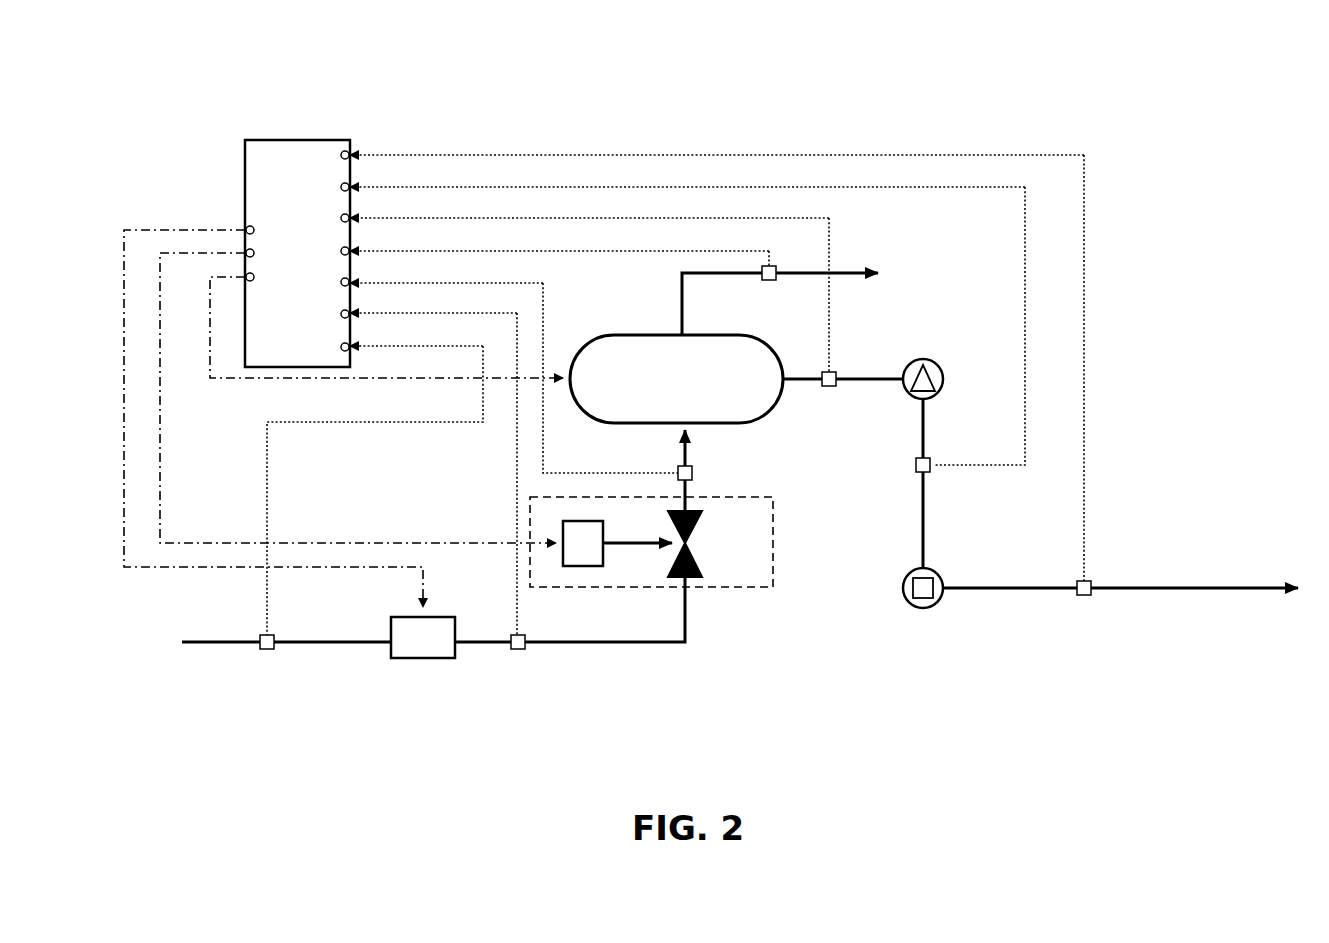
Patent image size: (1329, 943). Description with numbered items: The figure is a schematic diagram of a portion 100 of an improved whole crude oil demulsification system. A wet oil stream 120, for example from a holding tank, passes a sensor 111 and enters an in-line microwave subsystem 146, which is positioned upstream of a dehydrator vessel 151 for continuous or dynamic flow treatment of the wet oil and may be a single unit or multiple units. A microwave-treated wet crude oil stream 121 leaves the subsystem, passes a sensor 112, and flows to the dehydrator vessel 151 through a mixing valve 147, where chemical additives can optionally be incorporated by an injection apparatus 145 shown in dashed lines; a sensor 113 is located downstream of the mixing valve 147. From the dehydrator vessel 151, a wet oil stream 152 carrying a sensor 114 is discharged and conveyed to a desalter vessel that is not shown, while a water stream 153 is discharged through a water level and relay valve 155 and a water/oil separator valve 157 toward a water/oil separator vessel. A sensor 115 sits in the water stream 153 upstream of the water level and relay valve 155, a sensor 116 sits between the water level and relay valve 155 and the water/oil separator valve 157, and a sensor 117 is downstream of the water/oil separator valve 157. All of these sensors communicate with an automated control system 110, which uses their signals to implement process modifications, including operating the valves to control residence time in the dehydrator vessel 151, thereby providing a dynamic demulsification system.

The portion of an improved whole crude oil desulfurization system 100 is at (215, 87).
The automated control system 110 is at (297, 253).
The sensor 111 is at (267, 649).
The sensor 112 is at (518, 649).
The sensor 113 is at (692, 473).
The sensor 114 is at (769, 280).
The sensor 115 is at (829, 386).
The sensor 116 is at (916, 465).
The sensor 117 is at (1084, 595).
The wet oil stream 120 is at (362, 640).
The microwave-treated wet crude oil stream 121 is at (562, 640).
The injection apparatus 145 is at (587, 521).
The in-line microwave subsystem 146 is at (423, 637).
The mixing valve 147 is at (703, 531).
The dehydrator vessel 151 is at (676, 379).
The wet oil stream 152 is at (682, 300).
The water stream 153 is at (862, 377).
The water level and relay valve 155 is at (943, 383).
The water/oil separator valve 157 is at (943, 592).